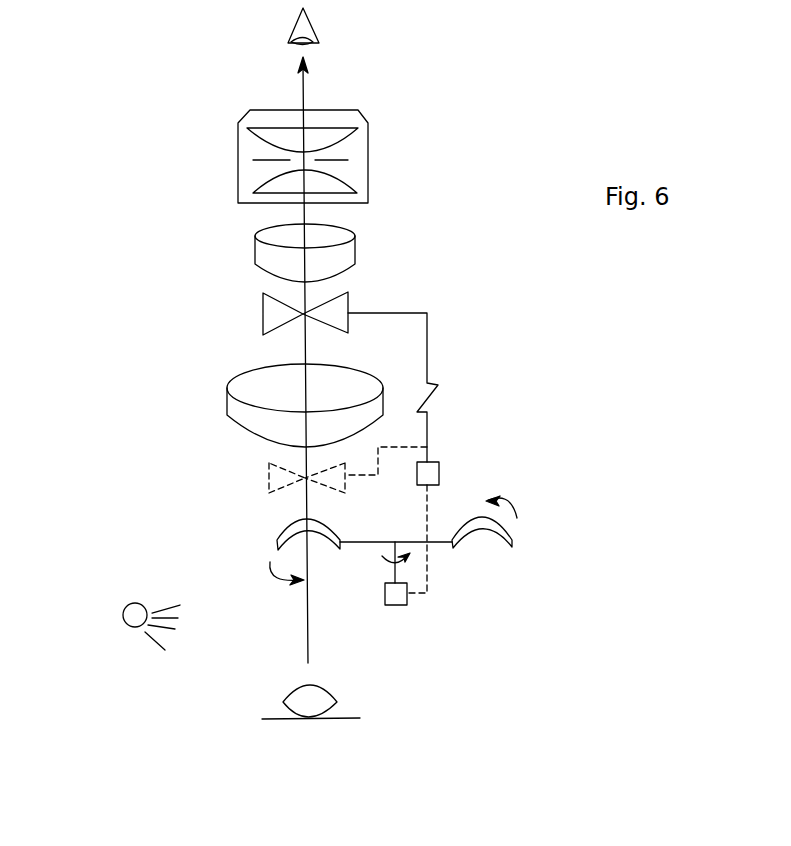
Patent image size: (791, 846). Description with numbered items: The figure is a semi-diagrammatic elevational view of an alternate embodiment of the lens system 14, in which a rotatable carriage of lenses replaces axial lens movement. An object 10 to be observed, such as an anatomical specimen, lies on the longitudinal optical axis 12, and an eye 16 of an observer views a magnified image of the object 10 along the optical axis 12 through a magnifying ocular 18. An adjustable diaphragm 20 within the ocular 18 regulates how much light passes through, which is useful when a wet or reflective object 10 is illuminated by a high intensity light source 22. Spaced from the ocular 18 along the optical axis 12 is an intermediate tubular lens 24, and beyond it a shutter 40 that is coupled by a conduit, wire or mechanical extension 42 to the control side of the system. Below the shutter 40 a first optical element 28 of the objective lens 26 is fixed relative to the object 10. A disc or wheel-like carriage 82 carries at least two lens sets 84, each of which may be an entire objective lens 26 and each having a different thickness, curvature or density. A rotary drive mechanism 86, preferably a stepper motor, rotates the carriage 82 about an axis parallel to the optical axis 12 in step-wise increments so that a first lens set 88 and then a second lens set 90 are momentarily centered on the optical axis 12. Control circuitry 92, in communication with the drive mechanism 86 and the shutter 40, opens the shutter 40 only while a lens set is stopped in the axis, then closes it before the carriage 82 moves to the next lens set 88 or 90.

The object 10 is at (318, 697).
The longitudinal optical axis 12 is at (306, 79).
The lens system 14 is at (207, 252).
The eye 16 is at (315, 25).
The ocular 18 is at (362, 147).
The adjustable diaphragm 20 is at (349, 160).
The light source 22 is at (131, 603).
The intermediate tubular lens 24 is at (345, 243).
The objective lens 26 is at (383, 580).
The first optical element 28 is at (247, 387).
The shutter 40 is at (347, 300).
The conduit, wire or mechanical extension 42 is at (430, 346).
The carriage 82 is at (353, 543).
The lens set 84 is at (530, 487).
The rotary drive mechanism 86 is at (393, 606).
The first lens set 88 is at (287, 530).
The second lens set 90 is at (497, 545).
The control circuitry 92 is at (440, 474).